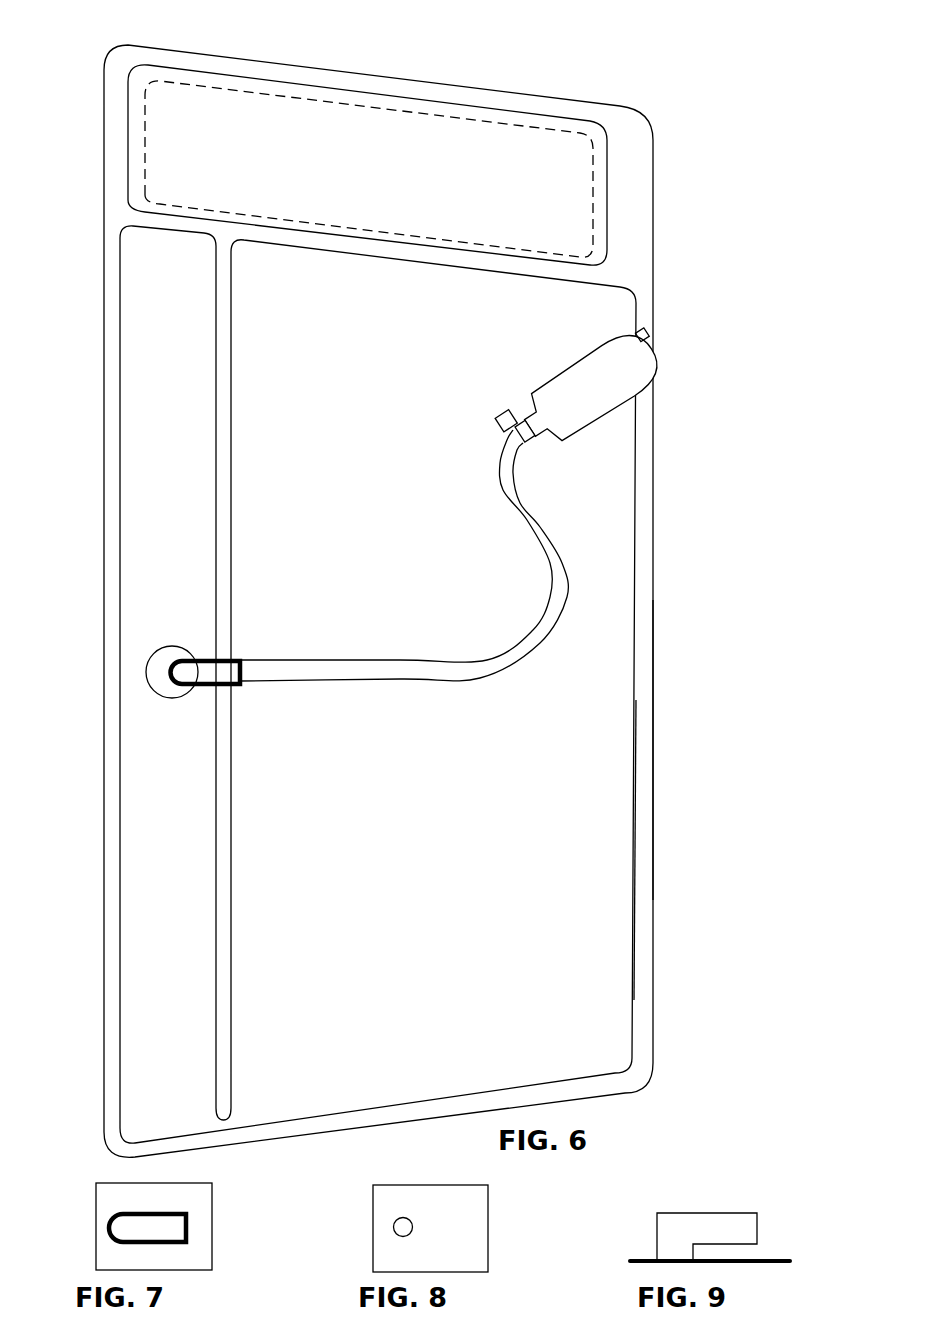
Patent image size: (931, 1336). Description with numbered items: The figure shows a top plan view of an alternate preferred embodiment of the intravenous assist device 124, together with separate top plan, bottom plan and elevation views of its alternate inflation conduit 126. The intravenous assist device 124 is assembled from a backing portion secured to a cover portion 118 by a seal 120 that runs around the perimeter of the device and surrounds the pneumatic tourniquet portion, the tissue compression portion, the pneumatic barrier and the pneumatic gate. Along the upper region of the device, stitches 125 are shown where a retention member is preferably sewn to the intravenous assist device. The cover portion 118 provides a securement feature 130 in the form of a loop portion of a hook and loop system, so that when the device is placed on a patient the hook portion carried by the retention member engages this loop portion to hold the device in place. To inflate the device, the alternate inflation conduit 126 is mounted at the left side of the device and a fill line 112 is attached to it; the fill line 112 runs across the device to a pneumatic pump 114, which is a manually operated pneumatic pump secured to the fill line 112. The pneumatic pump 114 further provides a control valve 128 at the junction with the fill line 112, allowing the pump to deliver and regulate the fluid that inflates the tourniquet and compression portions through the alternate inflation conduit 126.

In FIG. 6, the intravenous assist device 124 is at (544, 60).
In FIG. 6, the stitches 125 is at (317, 238).
In FIG. 6, the cover portion 118 is at (588, 994).
In FIG. 6, the seal 120 is at (645, 775).
In FIG. 6, the securement feature 130 is at (572, 882).
In FIG. 6, the fill line 112 is at (340, 683).
In FIG. 6, the pneumatic pump 114 is at (568, 355).
In FIG. 6, the control valve 128 is at (540, 437).
In FIG. 6, the alternate inflation conduit 126 is at (157, 658).
In FIG. 7, the alternate inflation conduit 126 is at (285, 1194).
In FIG. 8, the alternate inflation conduit 126 is at (497, 1210).
In FIG. 9, the alternate inflation conduit 126 is at (714, 1196).